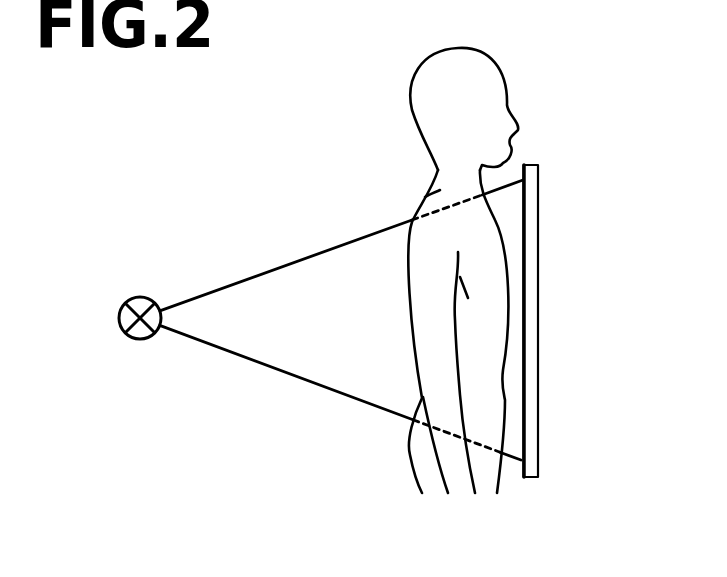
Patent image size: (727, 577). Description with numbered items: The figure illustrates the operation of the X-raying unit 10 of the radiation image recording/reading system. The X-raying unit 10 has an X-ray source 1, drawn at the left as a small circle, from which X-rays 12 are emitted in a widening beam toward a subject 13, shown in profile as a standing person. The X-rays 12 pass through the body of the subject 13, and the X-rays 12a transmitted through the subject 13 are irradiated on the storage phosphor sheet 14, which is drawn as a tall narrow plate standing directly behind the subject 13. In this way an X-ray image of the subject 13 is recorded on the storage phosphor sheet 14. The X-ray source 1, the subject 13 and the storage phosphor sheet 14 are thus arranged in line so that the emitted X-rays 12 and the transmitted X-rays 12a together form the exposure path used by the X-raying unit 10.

The X-ray source 1 is at (140, 297).
The X-raying unit 10 is at (357, 99).
The X-rays 12 is at (288, 378).
The X-rays transmitted through the subject 12a is at (517, 463).
The subject 13 is at (490, 72).
The storage phosphor sheet 14 is at (540, 222).